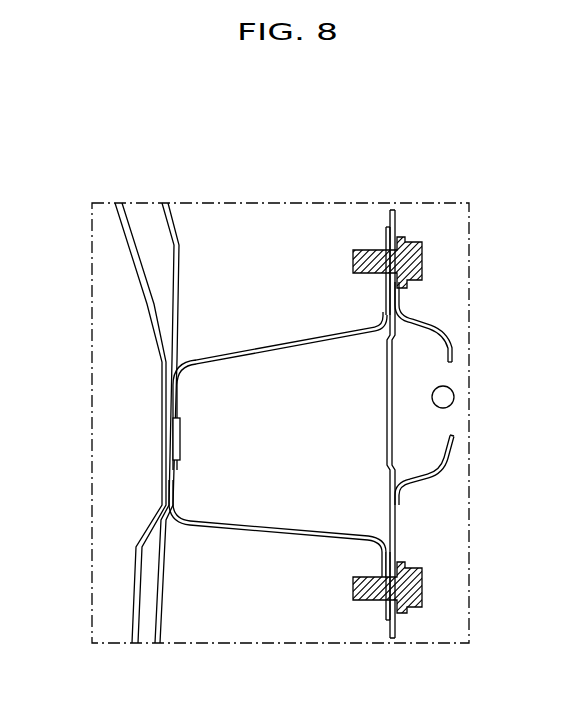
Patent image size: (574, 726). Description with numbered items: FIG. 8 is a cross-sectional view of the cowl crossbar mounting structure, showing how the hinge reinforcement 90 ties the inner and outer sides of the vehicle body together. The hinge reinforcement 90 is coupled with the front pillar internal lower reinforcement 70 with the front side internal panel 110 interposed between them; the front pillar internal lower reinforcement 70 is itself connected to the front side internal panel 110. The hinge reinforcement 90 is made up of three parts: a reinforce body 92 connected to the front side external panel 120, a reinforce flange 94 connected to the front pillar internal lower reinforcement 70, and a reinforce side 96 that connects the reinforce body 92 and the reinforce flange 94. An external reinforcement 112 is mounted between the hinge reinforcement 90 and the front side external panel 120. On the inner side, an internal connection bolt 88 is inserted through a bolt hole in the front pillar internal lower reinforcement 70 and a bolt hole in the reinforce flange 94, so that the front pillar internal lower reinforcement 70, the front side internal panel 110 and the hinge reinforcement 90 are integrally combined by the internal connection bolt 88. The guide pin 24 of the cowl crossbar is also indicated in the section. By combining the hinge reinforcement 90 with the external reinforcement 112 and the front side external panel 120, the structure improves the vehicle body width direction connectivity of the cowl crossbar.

The front side external panel 120 is at (135, 258).
The external reinforcement 112 is at (177, 252).
The hinge reinforcement 90 is at (268, 336).
The reinforce flange 94 is at (387, 292).
The front side internal panel 110 is at (387, 372).
The internal connection bolt 88 is at (422, 255).
The guide pin 24 is at (453, 396).
The front pillar internal lower reinforcement 70 is at (466, 463).
The reinforce body 92 is at (168, 475).
The reinforce side 96 is at (302, 530).